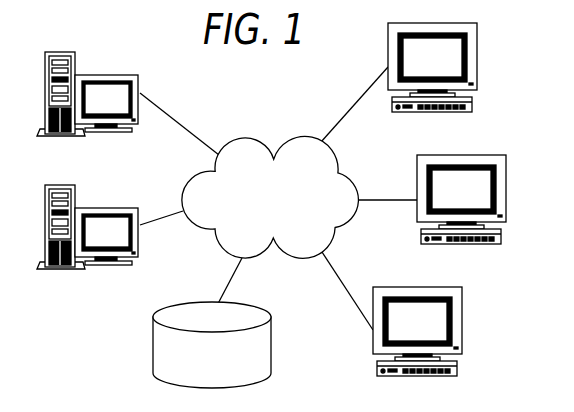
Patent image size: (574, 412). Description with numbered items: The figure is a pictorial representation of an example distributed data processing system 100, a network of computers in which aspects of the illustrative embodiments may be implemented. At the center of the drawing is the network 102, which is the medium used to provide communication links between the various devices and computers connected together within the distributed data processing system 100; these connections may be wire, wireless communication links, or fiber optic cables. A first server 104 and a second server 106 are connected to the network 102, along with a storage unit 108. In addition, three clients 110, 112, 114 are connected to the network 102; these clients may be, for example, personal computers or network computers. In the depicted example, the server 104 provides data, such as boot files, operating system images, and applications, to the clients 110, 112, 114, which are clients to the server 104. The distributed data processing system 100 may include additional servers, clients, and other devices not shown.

The distributed data processing system 100 is at (115, 330).
The network 102 is at (242, 139).
The server 104 is at (106, 74).
The server 106 is at (106, 207).
The storage unit 108 is at (272, 338).
The client 110 is at (477, 60).
The client 112 is at (506, 195).
The client 114 is at (462, 323).